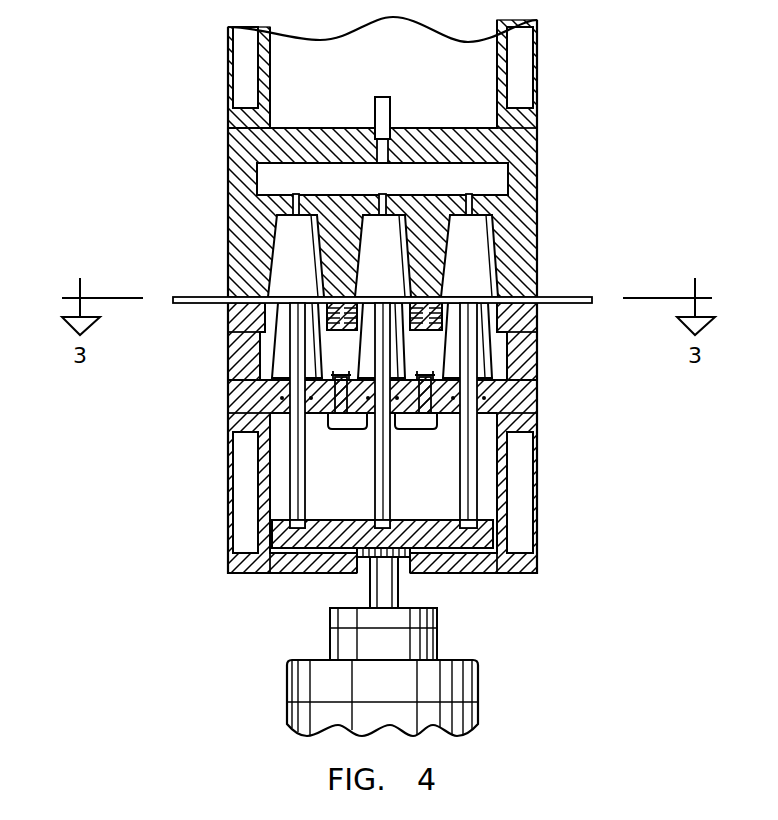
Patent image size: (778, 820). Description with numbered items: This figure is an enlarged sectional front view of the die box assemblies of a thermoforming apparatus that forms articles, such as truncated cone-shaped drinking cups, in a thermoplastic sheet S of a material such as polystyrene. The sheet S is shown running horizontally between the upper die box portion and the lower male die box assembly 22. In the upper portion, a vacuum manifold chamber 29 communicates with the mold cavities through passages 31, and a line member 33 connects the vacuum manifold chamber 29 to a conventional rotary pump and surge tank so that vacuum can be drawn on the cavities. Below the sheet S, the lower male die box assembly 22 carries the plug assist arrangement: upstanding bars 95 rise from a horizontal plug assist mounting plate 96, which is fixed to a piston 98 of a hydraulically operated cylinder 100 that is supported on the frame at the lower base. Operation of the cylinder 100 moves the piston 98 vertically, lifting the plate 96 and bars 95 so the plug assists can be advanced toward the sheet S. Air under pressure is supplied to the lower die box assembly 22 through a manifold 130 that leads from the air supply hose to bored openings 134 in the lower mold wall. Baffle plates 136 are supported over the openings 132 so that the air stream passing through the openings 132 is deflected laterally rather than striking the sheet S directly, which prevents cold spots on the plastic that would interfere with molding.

The lower male die box assembly 22 is at (602, 477).
The vacuum manifold chamber 29 is at (488, 178).
The passages 31 is at (472, 208).
The line member 33 is at (392, 110).
The sheet S is at (557, 303).
The upstanding bars 95 is at (288, 445).
The plug assist mounting plate 96 is at (288, 530).
The piston 98 is at (398, 587).
The hydraulically operated cylinder 100 is at (478, 672).
The manifold 130 is at (418, 428).
The openings 132 is at (427, 397).
The bored openings 134 is at (345, 427).
The baffle plates 136 is at (345, 357).